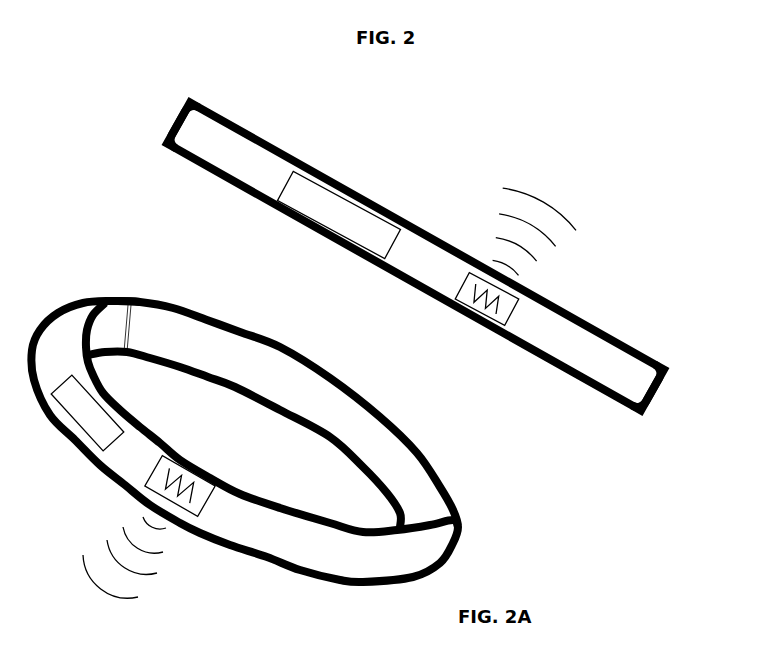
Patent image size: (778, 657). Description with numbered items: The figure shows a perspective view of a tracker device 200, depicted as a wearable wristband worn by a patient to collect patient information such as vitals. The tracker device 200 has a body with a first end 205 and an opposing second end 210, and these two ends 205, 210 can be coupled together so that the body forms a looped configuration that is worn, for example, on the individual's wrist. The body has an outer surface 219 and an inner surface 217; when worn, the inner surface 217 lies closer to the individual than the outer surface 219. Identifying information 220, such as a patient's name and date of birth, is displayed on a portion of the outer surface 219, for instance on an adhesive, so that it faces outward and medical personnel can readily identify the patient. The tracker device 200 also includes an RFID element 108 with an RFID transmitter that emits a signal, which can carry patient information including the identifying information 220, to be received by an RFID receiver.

In FIG. 2, the tracker device 200 is at (173, 112).
In FIG. 2A, the tracker device 200 is at (45, 305).
In FIG. 2, the first end 205 is at (665, 388).
In FIG. 2A, the first end 205 is at (130, 303).
In FIG. 2, the second end 210 is at (158, 140).
In FIG. 2A, the second end 210 is at (128, 303).
In FIG. 2, the identifying information 220 is at (320, 180).
In FIG. 2A, the identifying information 220 is at (73, 418).
In FIG. 2, the RFID element 108 is at (472, 273).
In FIG. 2A, the RFID element 108 is at (199, 477).
In FIG. 2, the outer surface 219 is at (584, 340).
In FIG. 2A, the outer surface 219 is at (333, 563).
In FIG. 2A, the inner surface 217 is at (416, 481).